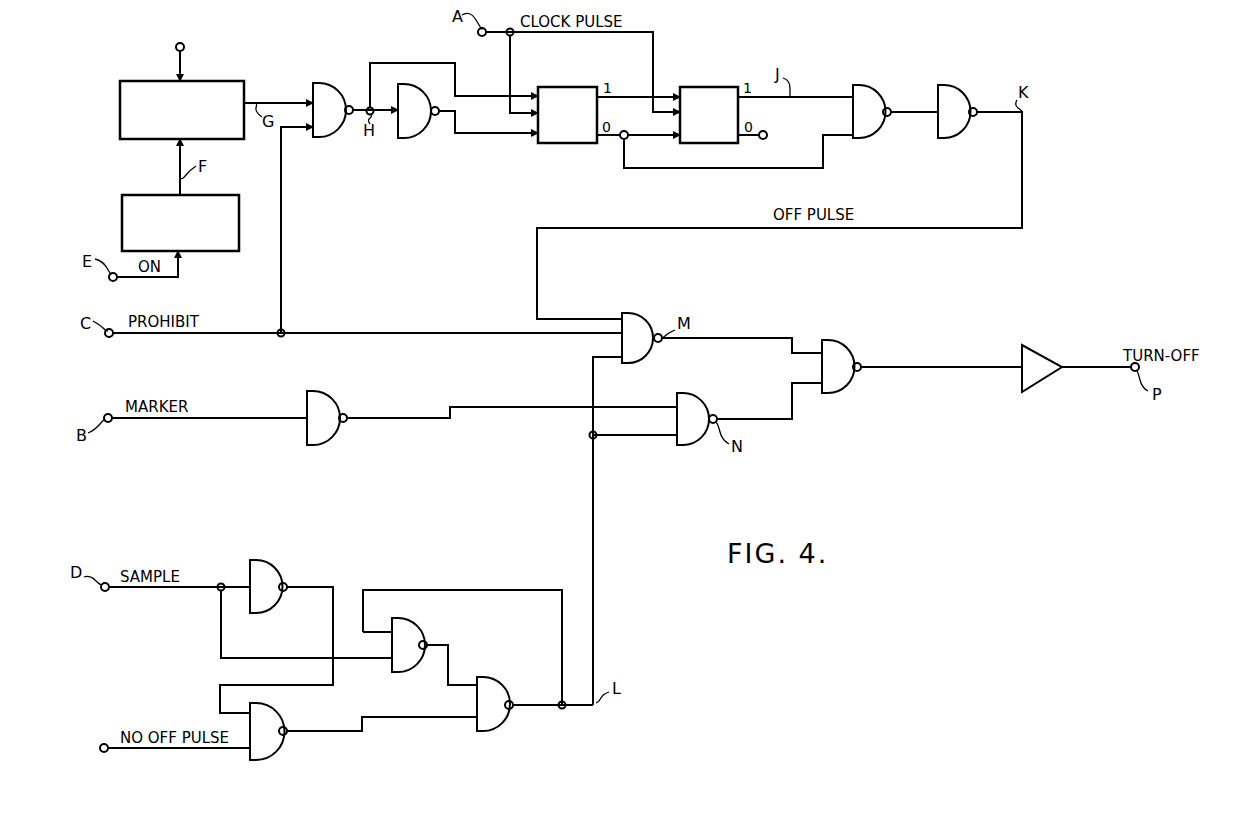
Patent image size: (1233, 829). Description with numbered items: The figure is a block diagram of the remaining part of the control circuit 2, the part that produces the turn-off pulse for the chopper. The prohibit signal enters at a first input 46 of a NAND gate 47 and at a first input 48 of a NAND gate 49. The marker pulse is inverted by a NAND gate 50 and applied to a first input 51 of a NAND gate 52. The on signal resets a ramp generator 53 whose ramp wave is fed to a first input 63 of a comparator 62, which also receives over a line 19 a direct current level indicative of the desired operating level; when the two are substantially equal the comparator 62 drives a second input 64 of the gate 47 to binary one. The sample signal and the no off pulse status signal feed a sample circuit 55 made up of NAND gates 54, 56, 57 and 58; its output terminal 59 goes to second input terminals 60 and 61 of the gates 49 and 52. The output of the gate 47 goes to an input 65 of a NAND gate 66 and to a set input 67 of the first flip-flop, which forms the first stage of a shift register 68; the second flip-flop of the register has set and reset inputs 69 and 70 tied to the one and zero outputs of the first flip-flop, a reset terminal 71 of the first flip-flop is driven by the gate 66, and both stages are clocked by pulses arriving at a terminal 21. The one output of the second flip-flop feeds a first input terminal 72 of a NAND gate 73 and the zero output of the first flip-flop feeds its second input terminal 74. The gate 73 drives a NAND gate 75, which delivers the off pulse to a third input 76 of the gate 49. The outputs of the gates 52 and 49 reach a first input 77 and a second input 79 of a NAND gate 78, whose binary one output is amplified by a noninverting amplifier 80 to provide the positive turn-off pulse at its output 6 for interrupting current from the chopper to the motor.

The control circuit 2 is at (868, 407).
The output of the amplifier 6 is at (1094, 366).
The line 19 is at (178, 53).
The terminal 21 is at (482, 37).
The first input of NAND gate 47 46 is at (297, 130).
The NAND gate 47 is at (339, 132).
The first input of NAND gate 49 48 is at (612, 341).
The NAND gate 49 is at (645, 318).
The NAND gate 50 is at (335, 440).
The first input of NAND gate 52 51 is at (645, 406).
The NAND gate 52 is at (704, 402).
The ramp generator 53 is at (122, 210).
The NAND gate 54 is at (274, 574).
The sample circuit 55 is at (391, 631).
The NAND gate 56 is at (268, 754).
The NAND gate 57 is at (418, 633).
The NAND gate 58 is at (497, 684).
The output terminal of the sample circuit 59 is at (565, 712).
The second input terminal of NAND gate 49 60 is at (614, 357).
The second input terminal of NAND gate 52 61 is at (660, 438).
The comparator 62 is at (120, 124).
The first input of the comparator 63 is at (178, 148).
The second input of gate 47 64 is at (298, 102).
The input of NAND gate 66 65 is at (390, 108).
The NAND gate 66 is at (425, 131).
The set input of FF5 67 is at (535, 95).
The shift register 68 is at (638, 97).
The set input of FF6 69 is at (672, 95).
The reset input of FF6 70 is at (666, 136).
The reset terminal of FF5 71 is at (520, 135).
The first input terminal of NAND gate 73 72 is at (833, 96).
The NAND gate 73 is at (881, 96).
The second input terminal of NAND gate 73 74 is at (845, 138).
The NAND gate 75 is at (966, 94).
The third input of gate 49 76 is at (602, 318).
The first input of NAND gate 78 77 is at (808, 385).
The NAND gate 78 is at (851, 357).
The second input of NAND gate 78 79 is at (806, 351).
The amplifier 80 is at (1034, 389).